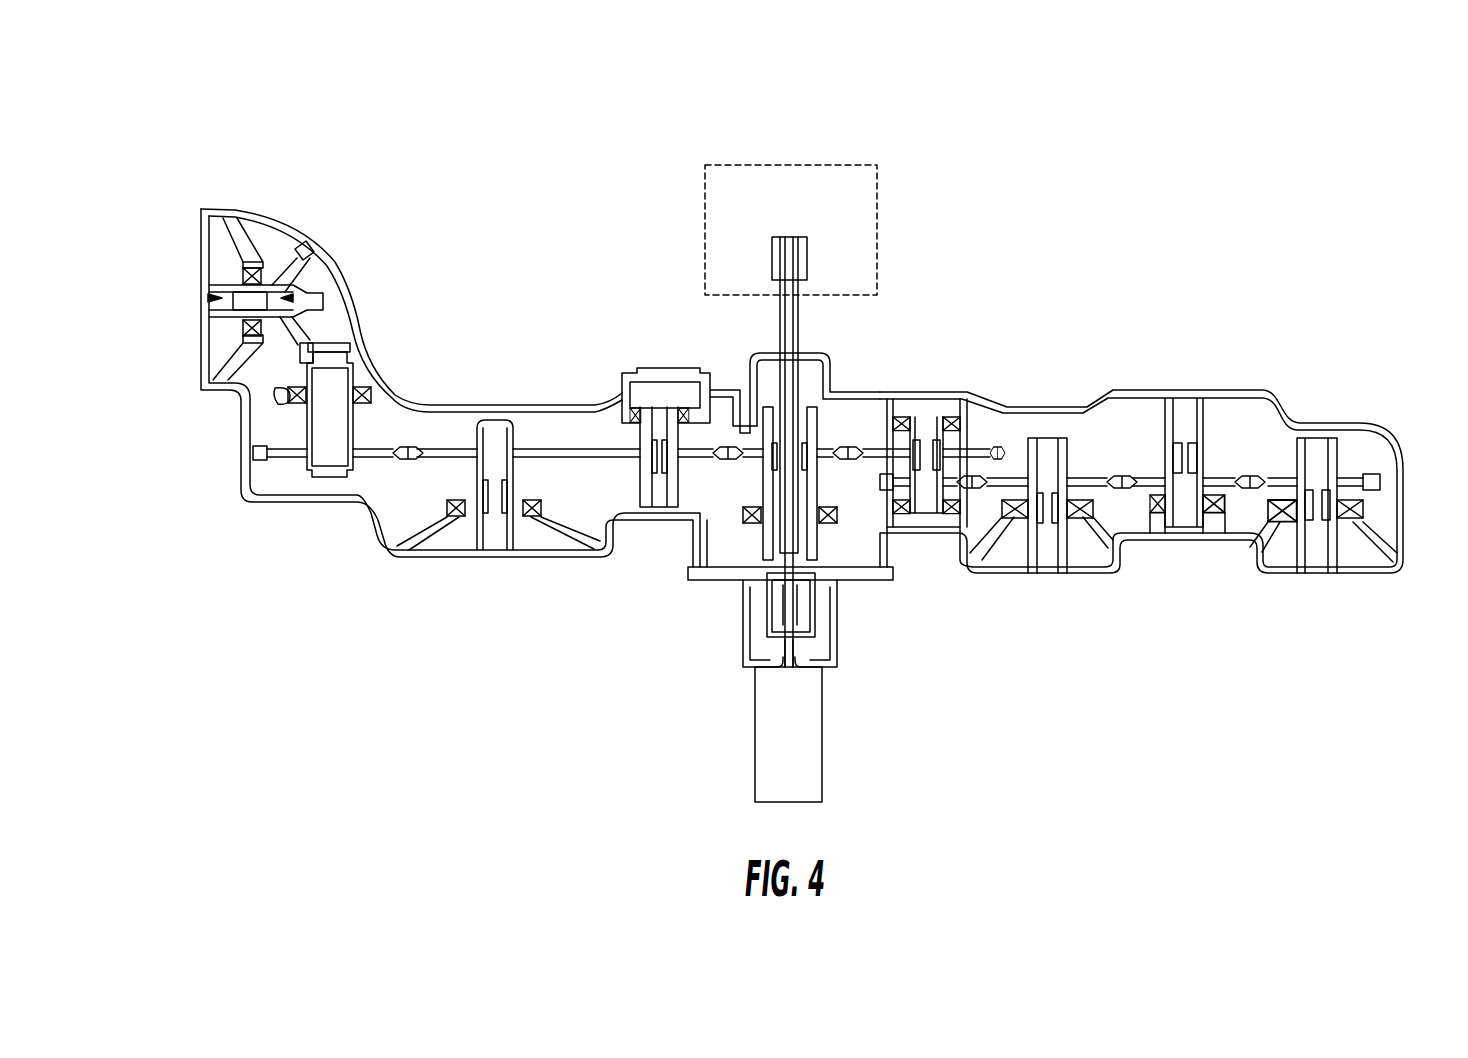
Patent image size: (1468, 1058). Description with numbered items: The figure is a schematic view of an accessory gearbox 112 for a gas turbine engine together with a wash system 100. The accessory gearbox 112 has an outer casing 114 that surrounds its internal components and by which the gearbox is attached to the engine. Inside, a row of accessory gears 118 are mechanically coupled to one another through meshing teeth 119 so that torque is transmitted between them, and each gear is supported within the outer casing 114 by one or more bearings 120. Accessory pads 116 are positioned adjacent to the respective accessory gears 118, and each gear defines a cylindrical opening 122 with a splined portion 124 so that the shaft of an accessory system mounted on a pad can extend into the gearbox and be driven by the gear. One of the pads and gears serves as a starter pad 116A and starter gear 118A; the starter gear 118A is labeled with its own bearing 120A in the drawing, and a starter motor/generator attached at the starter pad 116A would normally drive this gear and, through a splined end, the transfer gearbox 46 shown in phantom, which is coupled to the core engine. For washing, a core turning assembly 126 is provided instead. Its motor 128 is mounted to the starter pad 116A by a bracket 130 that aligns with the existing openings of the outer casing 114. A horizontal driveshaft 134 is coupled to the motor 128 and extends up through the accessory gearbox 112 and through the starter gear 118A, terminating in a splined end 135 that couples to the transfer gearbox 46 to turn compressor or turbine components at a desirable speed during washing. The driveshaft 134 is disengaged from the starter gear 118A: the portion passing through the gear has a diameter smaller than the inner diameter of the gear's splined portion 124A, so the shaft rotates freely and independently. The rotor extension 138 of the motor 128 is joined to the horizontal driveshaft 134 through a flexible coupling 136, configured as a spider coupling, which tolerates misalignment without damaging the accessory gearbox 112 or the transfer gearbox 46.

The transfer gearbox 46 is at (820, 163).
The wash system 100 is at (1132, 173).
The accessory gearbox 112 is at (1162, 288).
The outer casing 114 is at (262, 500).
The accessory pads 116 is at (203, 368).
The starter pad 116A is at (720, 577).
The accessory gears 118 is at (273, 283).
The starter gear 118A is at (813, 406).
The meshing teeth 119 is at (585, 445).
The bearings 120 is at (243, 275).
The central bearing 120A is at (806, 420).
The cylindrical opening 122 is at (222, 297).
The splined portion 124 is at (302, 298).
The splined portion 124A is at (770, 440).
The core turning assembly 126 is at (895, 688).
The motor 128 is at (775, 742).
The bracket 130 is at (745, 640).
The horizontal driveshaft 134 is at (790, 540).
The splined end 135 is at (815, 250).
The flexible coupling 136 is at (815, 608).
The rotor extension 138 is at (795, 647).